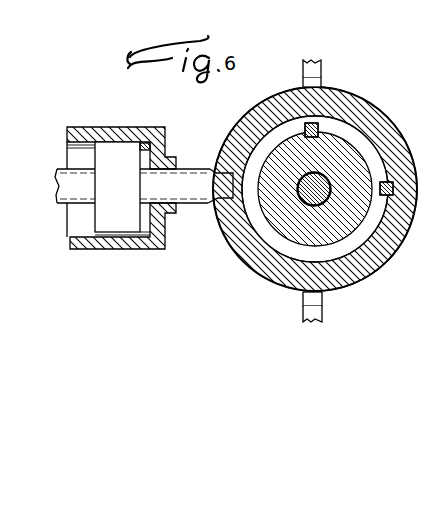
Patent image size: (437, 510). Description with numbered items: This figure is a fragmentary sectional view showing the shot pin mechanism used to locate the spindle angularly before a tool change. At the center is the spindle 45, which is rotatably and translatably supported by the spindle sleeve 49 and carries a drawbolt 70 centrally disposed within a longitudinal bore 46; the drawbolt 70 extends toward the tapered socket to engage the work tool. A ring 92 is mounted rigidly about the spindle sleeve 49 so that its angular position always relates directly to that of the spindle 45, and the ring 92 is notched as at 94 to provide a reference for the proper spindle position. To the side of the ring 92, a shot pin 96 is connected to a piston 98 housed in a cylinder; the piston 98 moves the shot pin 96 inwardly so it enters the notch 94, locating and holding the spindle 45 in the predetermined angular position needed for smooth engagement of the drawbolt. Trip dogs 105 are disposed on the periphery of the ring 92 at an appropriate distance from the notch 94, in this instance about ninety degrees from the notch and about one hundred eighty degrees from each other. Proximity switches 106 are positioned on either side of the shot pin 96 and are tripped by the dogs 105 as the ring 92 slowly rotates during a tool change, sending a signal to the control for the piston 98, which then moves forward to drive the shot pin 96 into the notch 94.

The ring 92 is at (382, 123).
The spindle sleeve 49 is at (373, 157).
The spindle 45 is at (352, 220).
The longitudinal bore 46 is at (318, 168).
The drawbolt 70 is at (318, 210).
The piston 98 is at (114, 144).
The notch 94 is at (217, 170).
The shot pin 96 is at (197, 202).
The trip dogs 105 is at (322, 80).
The proximity switches 106 is at (321, 68).